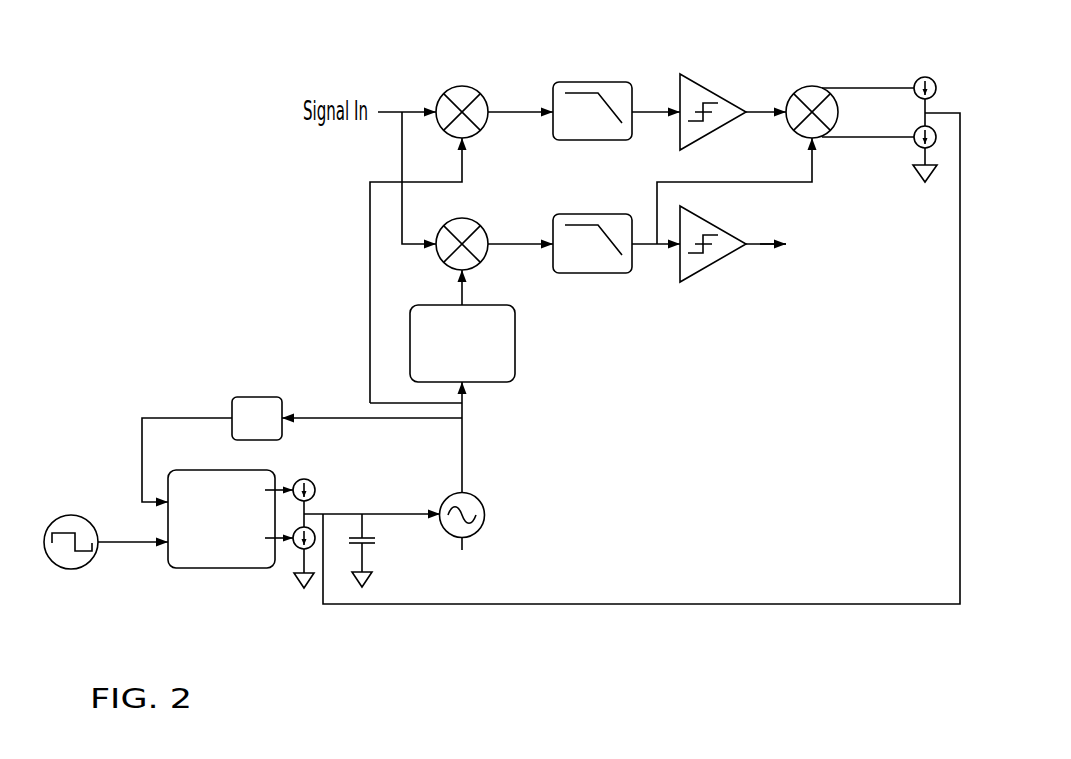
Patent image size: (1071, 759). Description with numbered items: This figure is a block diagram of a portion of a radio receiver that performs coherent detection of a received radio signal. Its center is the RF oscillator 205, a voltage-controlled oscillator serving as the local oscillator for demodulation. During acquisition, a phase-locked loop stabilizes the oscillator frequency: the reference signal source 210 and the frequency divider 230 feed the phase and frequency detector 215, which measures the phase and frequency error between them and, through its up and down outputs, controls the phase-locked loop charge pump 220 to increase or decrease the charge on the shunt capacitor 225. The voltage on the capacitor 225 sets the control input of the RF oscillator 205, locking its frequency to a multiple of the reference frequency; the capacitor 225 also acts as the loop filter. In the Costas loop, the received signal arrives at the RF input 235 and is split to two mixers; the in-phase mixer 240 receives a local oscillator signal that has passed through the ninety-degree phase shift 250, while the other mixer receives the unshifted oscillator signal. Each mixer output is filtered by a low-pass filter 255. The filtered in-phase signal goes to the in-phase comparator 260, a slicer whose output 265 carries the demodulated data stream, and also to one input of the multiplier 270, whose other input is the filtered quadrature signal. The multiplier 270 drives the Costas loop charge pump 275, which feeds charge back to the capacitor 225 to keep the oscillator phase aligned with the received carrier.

The RF oscillator 205 is at (476, 534).
The reference signal source 210 is at (70, 569).
The phase and frequency detector 215 is at (222, 568).
The phase-locked loop charge pump 220 is at (323, 474).
The shunt capacitor 225 is at (373, 543).
The frequency divider 230 is at (250, 395).
The RF input 235 is at (401, 111).
The in-phase mixer 240 is at (484, 97).
The 90-degree phase shift 250 is at (515, 343).
The low-pass filter 255 is at (592, 141).
The in-phase comparator 260 is at (715, 135).
The output 265 is at (758, 246).
The multiplier 270 is at (796, 88).
The Costas loop charge pump 275 is at (943, 73).